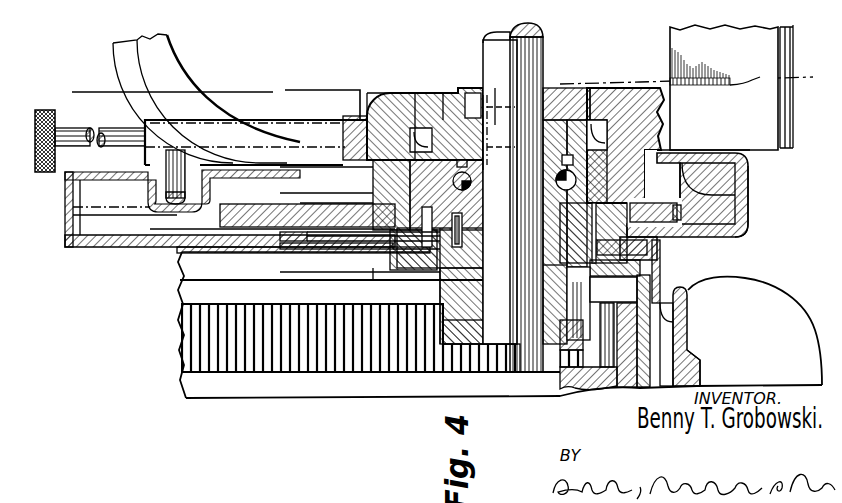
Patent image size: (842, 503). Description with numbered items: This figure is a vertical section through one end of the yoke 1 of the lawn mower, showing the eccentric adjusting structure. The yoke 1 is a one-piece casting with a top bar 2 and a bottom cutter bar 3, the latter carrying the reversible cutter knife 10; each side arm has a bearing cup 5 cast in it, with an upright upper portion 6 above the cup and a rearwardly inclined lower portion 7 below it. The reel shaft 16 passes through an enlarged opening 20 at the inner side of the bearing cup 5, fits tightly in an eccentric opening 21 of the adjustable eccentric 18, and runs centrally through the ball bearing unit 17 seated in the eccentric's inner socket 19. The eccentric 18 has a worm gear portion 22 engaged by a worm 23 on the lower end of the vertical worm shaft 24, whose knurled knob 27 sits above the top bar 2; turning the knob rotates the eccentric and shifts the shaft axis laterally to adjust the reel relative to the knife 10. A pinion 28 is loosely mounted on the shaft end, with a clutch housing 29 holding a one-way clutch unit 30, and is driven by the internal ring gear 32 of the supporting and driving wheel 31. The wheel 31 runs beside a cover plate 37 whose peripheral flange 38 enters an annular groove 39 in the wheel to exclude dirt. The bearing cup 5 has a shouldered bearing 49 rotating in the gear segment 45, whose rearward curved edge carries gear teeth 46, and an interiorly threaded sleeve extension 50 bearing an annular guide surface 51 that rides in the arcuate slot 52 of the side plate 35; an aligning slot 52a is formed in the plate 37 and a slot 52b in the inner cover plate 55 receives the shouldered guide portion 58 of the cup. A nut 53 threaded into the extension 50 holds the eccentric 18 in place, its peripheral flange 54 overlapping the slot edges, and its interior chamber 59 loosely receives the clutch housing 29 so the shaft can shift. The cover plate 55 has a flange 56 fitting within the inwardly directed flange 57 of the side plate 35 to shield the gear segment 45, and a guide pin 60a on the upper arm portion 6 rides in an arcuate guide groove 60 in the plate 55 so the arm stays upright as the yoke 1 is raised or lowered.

The frame unit (yoke) 1 is at (195, 71).
The top bar 2 is at (113, 43).
The bottom cutter bar 3 is at (731, 47).
The bearing cup 5 is at (91, 83).
The upper portion of arm 6 is at (316, 131).
The lower portion of arm 7 is at (732, 120).
The cutter knife 10 is at (786, 148).
The shaft 16 is at (538, 68).
The ball bearing unit 17 is at (485, 168).
The adjustable eccentric 18 is at (415, 173).
The inner socket 19 is at (488, 150).
The enlarged opening 20 is at (462, 90).
The opening 21 is at (484, 137).
The worm gear portion 22 is at (415, 93).
The worm 23 is at (445, 108).
The worm shaft 24 is at (67, 146).
The knurled knob 27 is at (45, 110).
The pinion 28 is at (596, 289).
The clutch housing 29 is at (445, 250).
The clutch unit 30 is at (659, 260).
The supporting and driving wheel 31 is at (783, 285).
The internal ring gear 32 is at (337, 372).
The side plate 35 is at (103, 247).
The cover plate 37 is at (250, 252).
The peripheral flange 38 is at (688, 295).
The annular groove 39 is at (690, 337).
The gear segment 45 is at (247, 206).
The gear teeth 46 is at (680, 207).
The shouldered bearing 49 is at (362, 246).
The sleeve extension 50 is at (404, 273).
The annular guide surface 51 is at (383, 250).
The arcuate slot 52 is at (327, 236).
The aligning arcuate slot 52a is at (345, 240).
The arcuate slot 52b is at (322, 168).
The nut 53 is at (659, 290).
The peripheral flange 54 is at (388, 273).
The cover plate 55 is at (80, 247).
The peripheral flange 56 is at (729, 237).
The peripheral flange 57 is at (749, 212).
The shouldered guide portion 58 is at (645, 88).
The interior chamber 59 is at (545, 265).
The arcuate guide groove 60 is at (168, 212).
The guide pin 60a is at (152, 188).